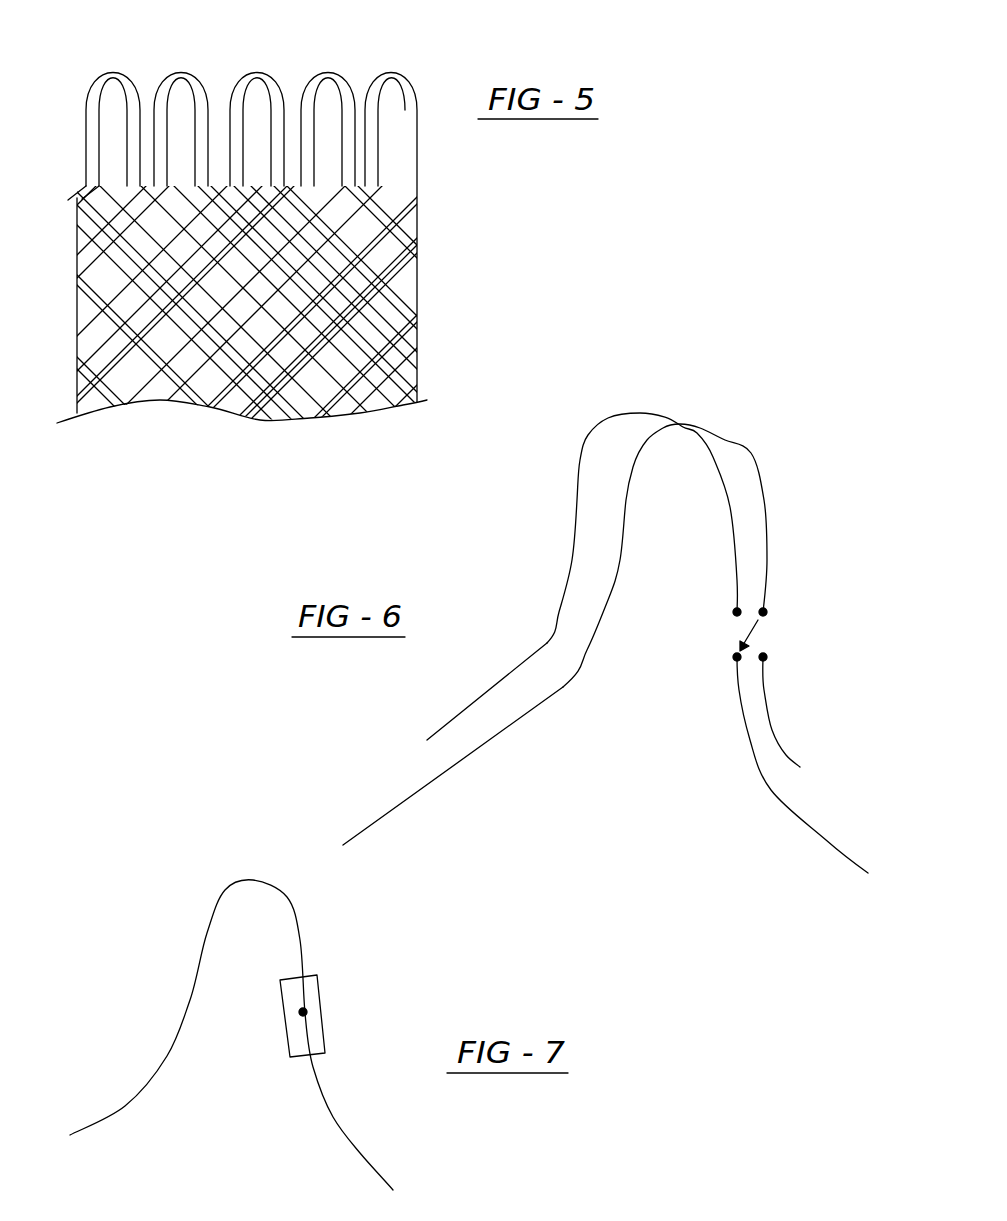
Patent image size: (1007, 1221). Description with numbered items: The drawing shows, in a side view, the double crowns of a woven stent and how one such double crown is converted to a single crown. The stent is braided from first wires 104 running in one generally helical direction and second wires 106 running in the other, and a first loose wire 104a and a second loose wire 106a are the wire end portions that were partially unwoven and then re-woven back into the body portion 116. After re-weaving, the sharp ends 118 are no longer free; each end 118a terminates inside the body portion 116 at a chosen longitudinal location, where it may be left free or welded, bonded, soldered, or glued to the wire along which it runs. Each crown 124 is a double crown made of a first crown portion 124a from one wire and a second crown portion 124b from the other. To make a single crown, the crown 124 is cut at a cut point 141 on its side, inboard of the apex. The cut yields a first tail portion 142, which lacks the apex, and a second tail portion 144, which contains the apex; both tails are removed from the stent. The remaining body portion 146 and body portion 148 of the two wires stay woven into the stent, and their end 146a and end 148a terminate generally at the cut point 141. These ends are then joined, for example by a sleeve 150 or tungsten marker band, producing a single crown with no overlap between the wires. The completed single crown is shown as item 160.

In FIG. 6, the first wires 104 is at (487, 745).
In FIG. 5, the first loose wire 104a is at (113, 287).
In FIG. 6, the second wires 106 is at (768, 740).
In FIG. 5, the second loose wire 106a is at (187, 213).
In FIG. 5, the body portion 116 is at (308, 262).
In FIG. 5, the sharp ends 118 is at (323, 242).
In FIG. 5, the wire end 118a is at (243, 322).
In FIG. 6, the wire end 118a is at (443, 727).
In FIG. 5, the crown 124 is at (182, 72).
In FIG. 6, the crown 124 is at (668, 397).
In FIG. 5, the first crown portion 124a is at (353, 82).
In FIG. 6, the first crown portion 124a is at (740, 445).
In FIG. 5, the second crown portion 124b is at (235, 83).
In FIG. 6, the second crown portion 124b is at (593, 438).
In FIG. 6, the cut point 141 is at (760, 640).
In FIG. 6, the first tail portion 142 is at (770, 697).
In FIG. 6, the second tail portion 144 is at (574, 555).
In FIG. 6, the body portion of wire 146 is at (572, 688).
In FIG. 6, the end of body portion 146a is at (766, 590).
In FIG. 6, the body portion of wire 148 is at (752, 742).
In FIG. 6, the end of body portion 148a is at (742, 685).
In FIG. 7, the sleeve 150 is at (323, 1018).
In FIG. 7, the loop 160 is at (257, 873).